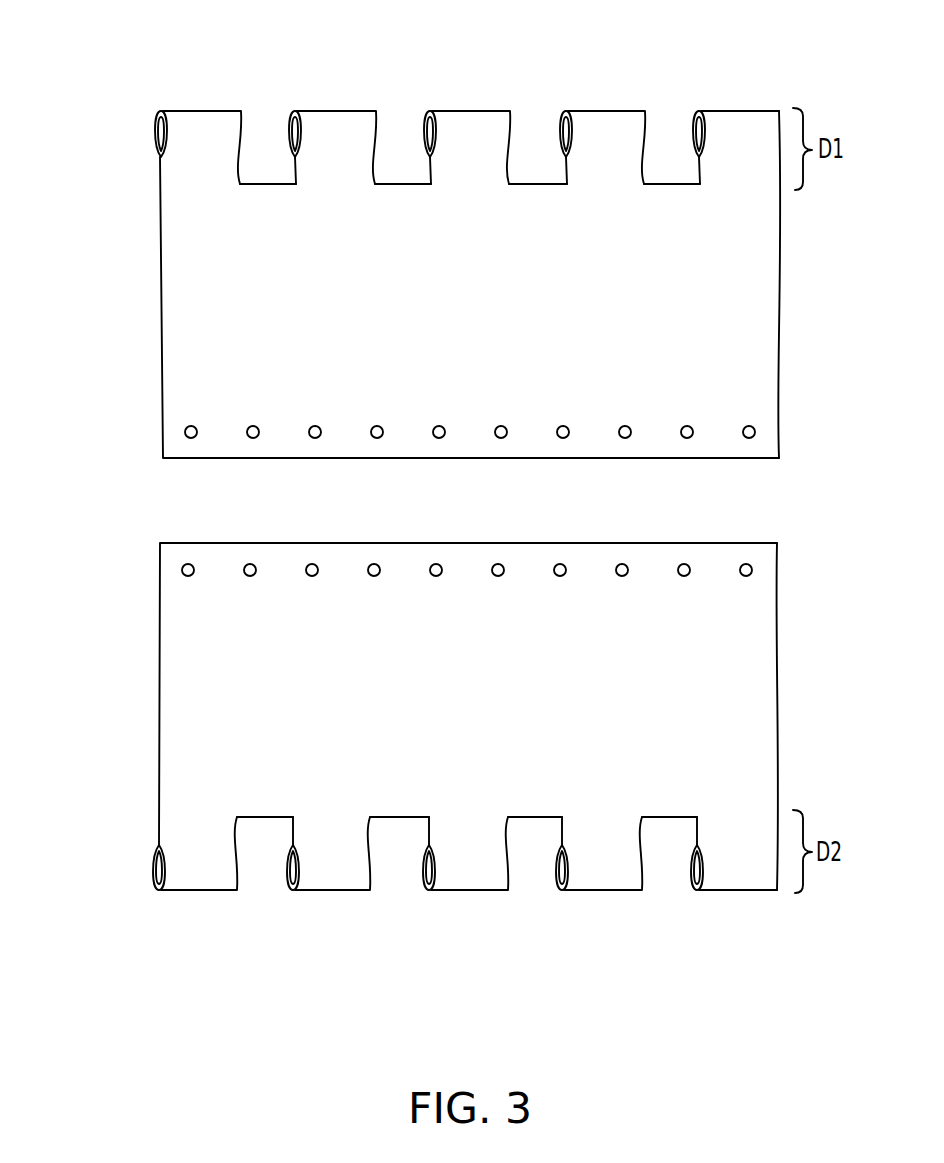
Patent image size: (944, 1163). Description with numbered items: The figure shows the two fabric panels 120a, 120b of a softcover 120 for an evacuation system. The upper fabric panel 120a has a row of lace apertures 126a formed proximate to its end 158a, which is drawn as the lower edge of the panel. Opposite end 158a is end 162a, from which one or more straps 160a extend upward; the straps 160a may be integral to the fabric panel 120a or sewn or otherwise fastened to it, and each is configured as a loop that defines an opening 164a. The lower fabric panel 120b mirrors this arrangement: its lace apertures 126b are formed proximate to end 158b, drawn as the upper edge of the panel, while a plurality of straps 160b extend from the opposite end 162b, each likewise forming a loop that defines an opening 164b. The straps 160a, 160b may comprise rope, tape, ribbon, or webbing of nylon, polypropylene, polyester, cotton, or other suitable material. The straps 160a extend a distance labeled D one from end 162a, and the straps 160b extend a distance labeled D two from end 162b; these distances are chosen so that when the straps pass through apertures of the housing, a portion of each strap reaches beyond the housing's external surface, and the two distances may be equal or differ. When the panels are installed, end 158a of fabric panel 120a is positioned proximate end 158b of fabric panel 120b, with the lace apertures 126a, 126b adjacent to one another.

The softcover 120 is at (150, 60).
The fabric panel 120a is at (480, 297).
The fabric panel 120b is at (490, 729).
The lace apertures 126a is at (624, 426).
The lace apertures 126b is at (623, 576).
The end 158a is at (755, 458).
The end 158b is at (742, 543).
The straps 160a is at (338, 135).
The straps 160b is at (462, 855).
The end 162a is at (405, 184).
The end 162b is at (658, 818).
The opening 164a is at (545, 127).
The opening 164b is at (142, 873).